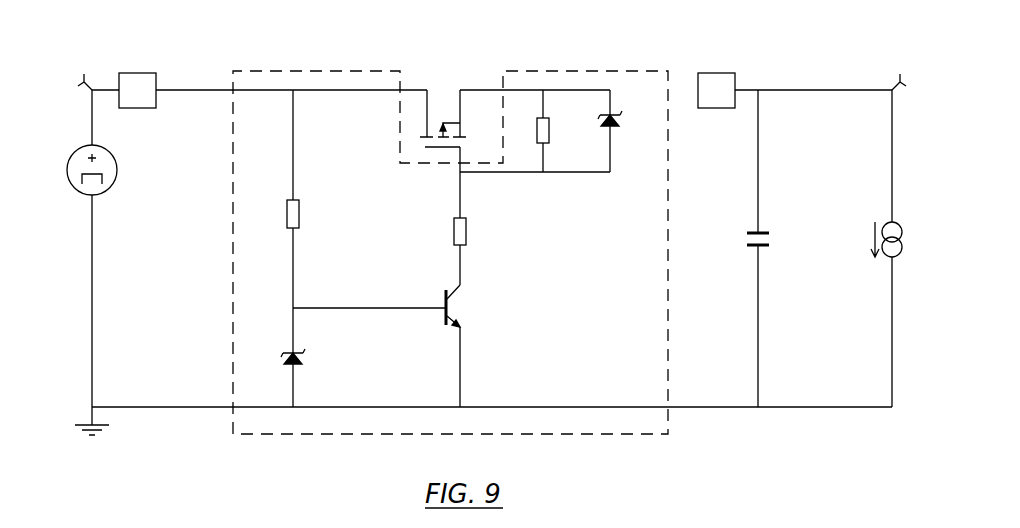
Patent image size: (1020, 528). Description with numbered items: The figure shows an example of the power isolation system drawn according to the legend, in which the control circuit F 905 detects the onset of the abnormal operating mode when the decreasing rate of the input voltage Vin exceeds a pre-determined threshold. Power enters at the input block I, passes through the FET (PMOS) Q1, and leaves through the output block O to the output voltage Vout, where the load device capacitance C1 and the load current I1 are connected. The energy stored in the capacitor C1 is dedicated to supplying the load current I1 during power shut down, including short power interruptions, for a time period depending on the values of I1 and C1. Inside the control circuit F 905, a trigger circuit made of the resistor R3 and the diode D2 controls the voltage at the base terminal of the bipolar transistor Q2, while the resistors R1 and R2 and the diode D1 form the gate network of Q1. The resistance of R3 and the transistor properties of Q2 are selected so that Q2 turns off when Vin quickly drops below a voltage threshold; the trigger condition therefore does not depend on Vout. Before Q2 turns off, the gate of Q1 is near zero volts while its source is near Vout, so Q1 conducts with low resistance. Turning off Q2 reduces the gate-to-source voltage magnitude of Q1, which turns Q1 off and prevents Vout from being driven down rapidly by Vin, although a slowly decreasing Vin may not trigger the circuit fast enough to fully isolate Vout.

The control circuit F 905 is at (450, 252).
The input voltage Vin is at (65, 87).
The output voltage Vout is at (922, 87).
The input block I is at (137, 90).
The output block O is at (716, 90).
The FET (PMOS) Q1 is at (458, 154).
The bipolar transistor Q2 is at (467, 346).
The resistor R1 is at (474, 248).
The resistor R2 is at (557, 131).
The resistor R3 is at (307, 199).
The diode D1 is at (624, 131).
The diode D2 is at (276, 357).
The load device capacitance C1 is at (772, 248).
The load current I1 is at (896, 248).